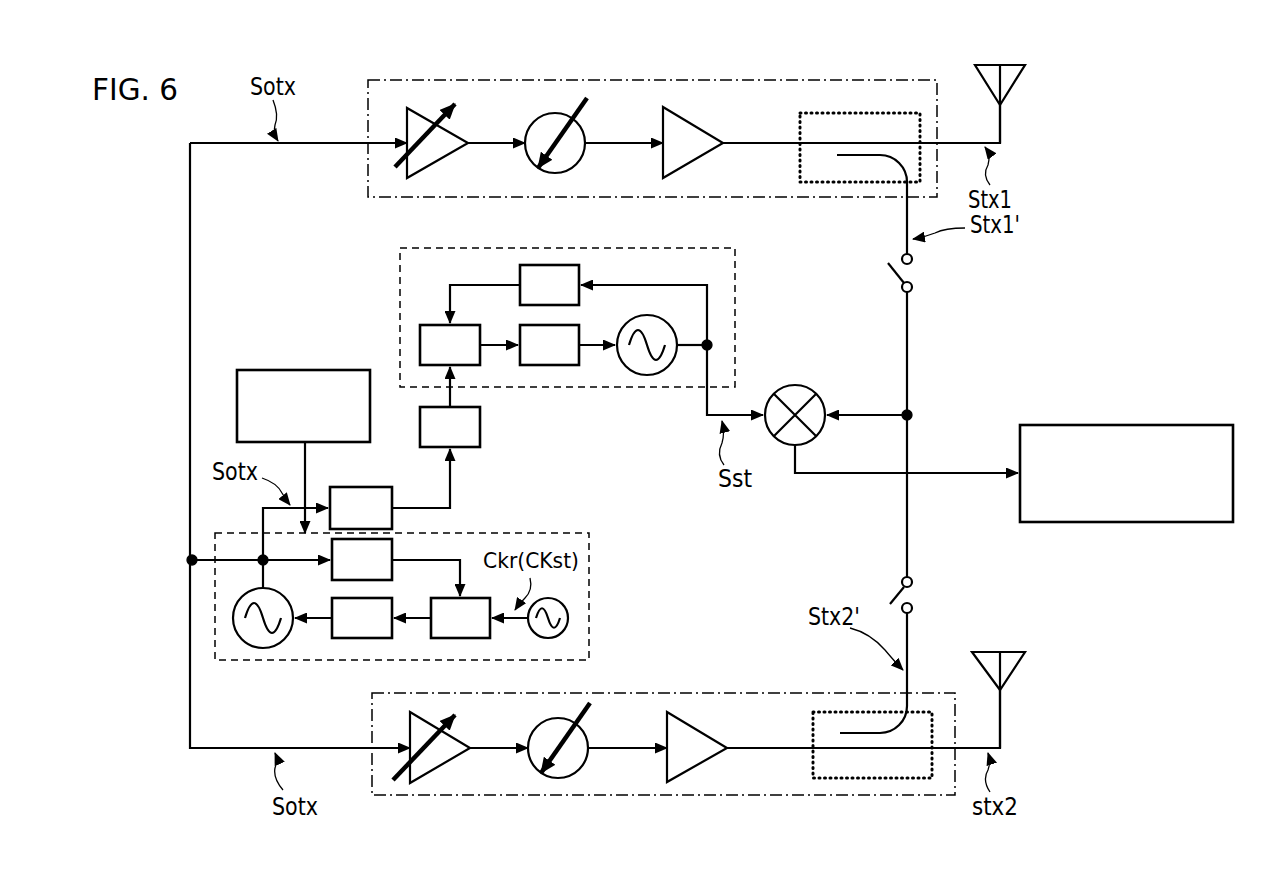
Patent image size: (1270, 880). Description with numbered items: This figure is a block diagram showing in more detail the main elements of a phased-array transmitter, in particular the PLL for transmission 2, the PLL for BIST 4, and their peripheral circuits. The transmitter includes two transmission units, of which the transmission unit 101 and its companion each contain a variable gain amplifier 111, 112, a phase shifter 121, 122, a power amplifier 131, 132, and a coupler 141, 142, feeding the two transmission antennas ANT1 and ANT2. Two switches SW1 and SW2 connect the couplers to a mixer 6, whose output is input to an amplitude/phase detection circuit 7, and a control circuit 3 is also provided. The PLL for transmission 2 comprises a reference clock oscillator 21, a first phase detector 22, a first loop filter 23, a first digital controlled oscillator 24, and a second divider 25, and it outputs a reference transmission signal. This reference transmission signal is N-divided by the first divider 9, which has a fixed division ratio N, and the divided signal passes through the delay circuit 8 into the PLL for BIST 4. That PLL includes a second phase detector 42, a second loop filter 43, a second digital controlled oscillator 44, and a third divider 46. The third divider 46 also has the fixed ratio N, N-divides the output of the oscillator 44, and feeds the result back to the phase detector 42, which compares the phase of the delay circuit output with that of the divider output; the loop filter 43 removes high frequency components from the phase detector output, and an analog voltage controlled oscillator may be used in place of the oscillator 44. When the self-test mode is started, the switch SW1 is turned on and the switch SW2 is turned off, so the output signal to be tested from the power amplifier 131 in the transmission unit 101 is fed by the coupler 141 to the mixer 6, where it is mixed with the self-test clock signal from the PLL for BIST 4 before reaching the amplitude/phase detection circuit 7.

The transmission unit 101 is at (783, 197).
The variable gain amplifier 111 is at (440, 165).
The phase shifter 121 is at (562, 172).
The power amplifier 131 is at (690, 163).
The coupler 141 is at (852, 183).
The variable gain amplifier 112 is at (435, 772).
The phase shifter 122 is at (575, 778).
The power amplifier 132 is at (690, 770).
The coupler 142 is at (892, 778).
The switch SW1 is at (917, 268).
The switch SW2 is at (917, 594).
The transmission antenna ANT1 is at (1015, 88).
The transmission antenna ANT2 is at (1015, 672).
The mixer 6 is at (795, 385).
The amplitude/phase detection circuit 7 is at (1148, 425).
The PLL for BIST 4 is at (670, 388).
The third divider 46 is at (520, 280).
The phase detector 42 is at (420, 340).
The loop filter 43 is at (548, 365).
The digital controlled oscillator 44 is at (636, 372).
The delay circuit 8 is at (480, 430).
The first divider 9 is at (380, 487).
The control circuit 3 is at (250, 370).
The PLL for transmission 2 is at (590, 647).
The second divider 25 is at (392, 548).
The phase detector 22 is at (465, 638).
The loop filter 23 is at (340, 638).
The digital controlled oscillator 24 is at (270, 648).
The reference clock oscillator 21 is at (568, 607).